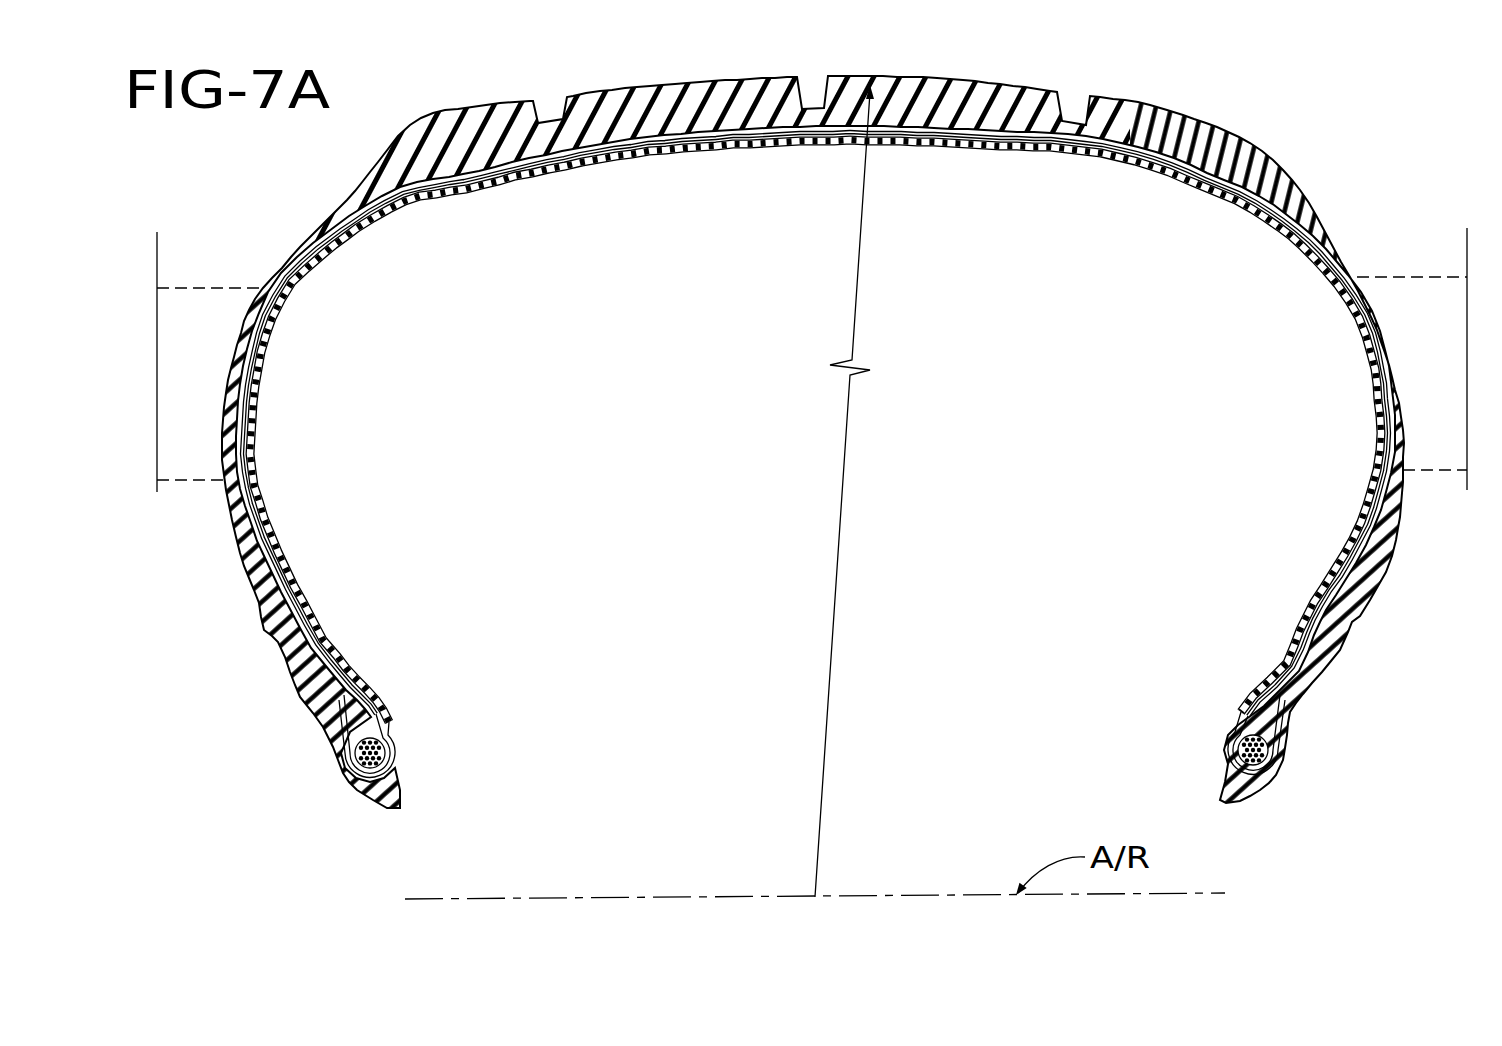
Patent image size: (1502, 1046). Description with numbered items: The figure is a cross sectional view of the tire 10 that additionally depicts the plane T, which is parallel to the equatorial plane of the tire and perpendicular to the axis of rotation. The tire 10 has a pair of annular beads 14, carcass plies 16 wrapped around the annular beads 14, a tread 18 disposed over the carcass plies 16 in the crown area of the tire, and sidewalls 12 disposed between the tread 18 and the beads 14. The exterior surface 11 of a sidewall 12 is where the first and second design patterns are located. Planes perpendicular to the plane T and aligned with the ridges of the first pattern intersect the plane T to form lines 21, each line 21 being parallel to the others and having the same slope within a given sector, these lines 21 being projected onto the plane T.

The tire 10 is at (1302, 152).
The exterior surface 11 is at (238, 543).
The sidewall 12 is at (253, 597).
The annular bead 14 is at (373, 775).
The carcass ply 16 is at (387, 712).
The tread 18 is at (920, 70).
The line 21 is at (158, 394).